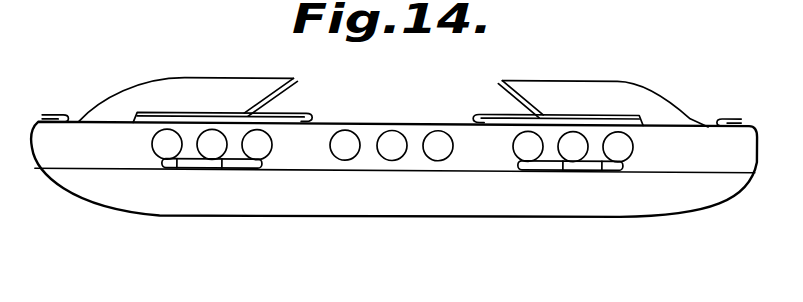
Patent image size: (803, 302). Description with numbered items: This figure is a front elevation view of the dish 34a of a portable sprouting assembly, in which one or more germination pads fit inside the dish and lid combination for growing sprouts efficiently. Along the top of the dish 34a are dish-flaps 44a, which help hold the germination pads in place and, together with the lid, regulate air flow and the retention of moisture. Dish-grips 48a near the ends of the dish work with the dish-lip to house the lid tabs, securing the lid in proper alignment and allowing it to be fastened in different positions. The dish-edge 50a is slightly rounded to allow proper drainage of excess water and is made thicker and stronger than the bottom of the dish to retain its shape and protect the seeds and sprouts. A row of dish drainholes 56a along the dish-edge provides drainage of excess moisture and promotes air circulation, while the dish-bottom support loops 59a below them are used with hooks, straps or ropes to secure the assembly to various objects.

The dish 34a is at (247, 217).
The dish-flaps 44a is at (252, 47).
The dish-grips 48a is at (157, 114).
The dish-edge 50a is at (758, 166).
The dish drainholes 56a is at (522, 160).
The dish-bottom support loops 59a is at (241, 168).